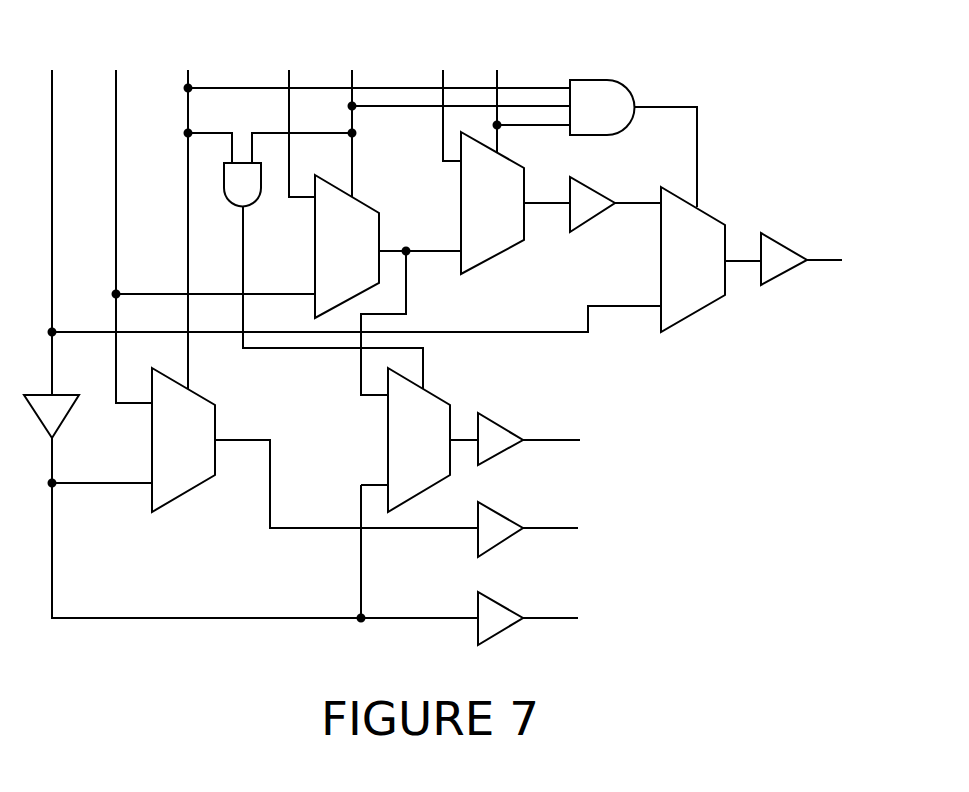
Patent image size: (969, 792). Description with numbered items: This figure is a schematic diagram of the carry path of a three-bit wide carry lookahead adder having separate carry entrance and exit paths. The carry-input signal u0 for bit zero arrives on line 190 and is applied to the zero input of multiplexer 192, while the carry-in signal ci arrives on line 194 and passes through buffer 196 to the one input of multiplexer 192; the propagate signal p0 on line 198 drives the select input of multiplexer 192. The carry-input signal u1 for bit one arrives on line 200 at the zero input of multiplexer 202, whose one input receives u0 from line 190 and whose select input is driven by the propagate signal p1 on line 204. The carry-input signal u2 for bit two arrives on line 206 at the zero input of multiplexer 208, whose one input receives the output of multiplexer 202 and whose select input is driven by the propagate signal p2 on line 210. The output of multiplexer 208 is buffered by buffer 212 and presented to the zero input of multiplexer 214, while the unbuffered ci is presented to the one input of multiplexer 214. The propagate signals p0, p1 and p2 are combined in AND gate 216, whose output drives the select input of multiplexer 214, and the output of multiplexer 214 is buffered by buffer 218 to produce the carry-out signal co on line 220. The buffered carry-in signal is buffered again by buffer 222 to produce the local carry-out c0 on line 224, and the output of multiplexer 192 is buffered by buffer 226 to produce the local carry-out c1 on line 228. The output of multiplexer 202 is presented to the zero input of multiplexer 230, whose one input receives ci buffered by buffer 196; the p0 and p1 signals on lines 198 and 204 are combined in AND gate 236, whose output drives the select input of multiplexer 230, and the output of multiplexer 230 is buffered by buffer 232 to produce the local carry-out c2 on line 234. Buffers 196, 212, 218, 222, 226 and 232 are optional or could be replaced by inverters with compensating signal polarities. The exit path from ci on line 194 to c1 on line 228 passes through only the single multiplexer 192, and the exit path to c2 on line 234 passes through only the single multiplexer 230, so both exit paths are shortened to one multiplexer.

The line 190 is at (209, 219).
The multiplexer 192 is at (315, 439).
The line 194 is at (352, 328).
The buffer 196 is at (60, 392).
The line 198 is at (373, 212).
The line 200 is at (312, 116).
The multiplexer 202 is at (388, 277).
The line 204 is at (454, 116).
The line 206 is at (422, 98).
The multiplexer 208 is at (515, 214).
The line 210 is at (526, 94).
The buffer 212 is at (615, 189).
The multiplexer 214 is at (711, 250).
The AND gate 216 is at (633, 122).
The buffer 218 is at (790, 243).
The line 220 is at (841, 243).
The buffer 222 is at (505, 603).
The line 224 is at (568, 635).
The buffer 226 is at (507, 514).
The line 228 is at (568, 545).
The multiplexer 230 is at (419, 484).
The buffer 232 is at (509, 423).
The line 234 is at (569, 456).
The AND gate 236 is at (311, 276).